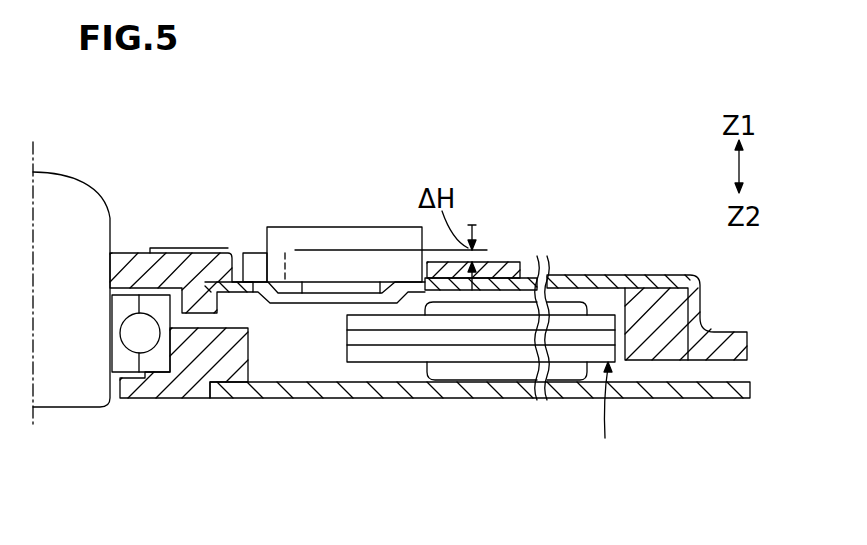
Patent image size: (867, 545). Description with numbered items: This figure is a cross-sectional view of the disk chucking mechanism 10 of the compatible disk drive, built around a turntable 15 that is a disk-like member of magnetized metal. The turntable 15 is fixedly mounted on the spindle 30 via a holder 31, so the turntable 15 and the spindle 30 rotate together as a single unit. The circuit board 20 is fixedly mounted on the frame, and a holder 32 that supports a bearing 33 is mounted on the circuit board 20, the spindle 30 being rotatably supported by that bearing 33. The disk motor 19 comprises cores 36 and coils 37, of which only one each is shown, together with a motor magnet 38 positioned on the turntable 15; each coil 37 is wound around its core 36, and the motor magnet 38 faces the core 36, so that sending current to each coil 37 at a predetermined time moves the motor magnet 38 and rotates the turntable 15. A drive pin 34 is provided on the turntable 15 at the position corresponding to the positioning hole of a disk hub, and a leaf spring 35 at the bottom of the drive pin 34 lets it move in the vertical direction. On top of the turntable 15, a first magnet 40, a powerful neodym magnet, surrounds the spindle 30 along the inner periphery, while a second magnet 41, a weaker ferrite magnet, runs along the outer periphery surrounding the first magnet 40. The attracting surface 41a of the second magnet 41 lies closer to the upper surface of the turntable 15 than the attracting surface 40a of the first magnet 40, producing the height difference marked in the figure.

The disk chucking mechanism 10 is at (456, 112).
The turntable 15 is at (583, 307).
The disk motor 19 is at (616, 418).
The circuit board 20 is at (677, 388).
The spindle 30 is at (50, 188).
The holder 31 is at (132, 262).
The holder 32 is at (183, 387).
The bearing 33 is at (127, 363).
The drive pin 34 is at (357, 237).
The leaf spring 35 is at (322, 300).
The core 36 is at (463, 347).
The coil 37 is at (616, 283).
The motor magnet 38 is at (670, 307).
The first magnet 40 is at (253, 262).
The attracting surface 40a is at (262, 253).
The second magnet 41 is at (535, 280).
The attracting surface 41a is at (498, 262).